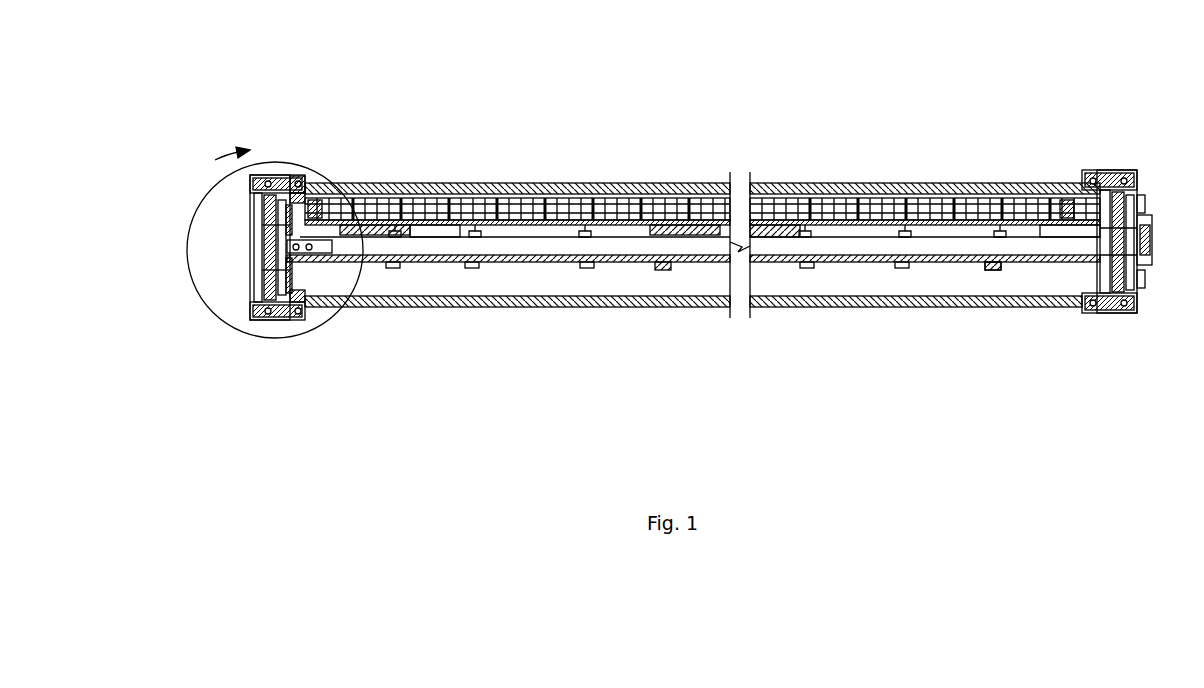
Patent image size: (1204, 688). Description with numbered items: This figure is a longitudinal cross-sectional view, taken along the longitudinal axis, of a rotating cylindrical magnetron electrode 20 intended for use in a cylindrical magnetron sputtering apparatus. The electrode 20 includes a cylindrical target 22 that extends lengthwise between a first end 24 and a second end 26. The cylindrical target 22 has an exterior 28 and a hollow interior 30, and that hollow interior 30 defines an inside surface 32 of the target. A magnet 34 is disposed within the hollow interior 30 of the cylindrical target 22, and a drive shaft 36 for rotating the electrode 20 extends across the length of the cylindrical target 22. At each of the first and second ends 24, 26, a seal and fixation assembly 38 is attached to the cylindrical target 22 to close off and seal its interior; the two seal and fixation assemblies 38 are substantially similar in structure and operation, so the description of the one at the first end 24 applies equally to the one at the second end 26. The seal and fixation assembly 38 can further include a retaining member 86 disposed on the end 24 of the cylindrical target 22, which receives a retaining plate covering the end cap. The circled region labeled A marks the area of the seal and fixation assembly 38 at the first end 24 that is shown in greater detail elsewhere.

The rotating cylindrical magnetron electrode 20 is at (803, 125).
The cylindrical target 22 is at (942, 183).
The first end 24 is at (308, 305).
The second end 26 is at (1085, 283).
The exterior 28 is at (517, 315).
The hollow interior 30 is at (899, 280).
The inside surface 32 is at (1002, 285).
The magnet 34 is at (500, 185).
The drive shaft 36 is at (670, 180).
The seal and fixation assembly 38 is at (232, 205).
The retaining member 86 is at (318, 156).
The detail area A is at (225, 272).